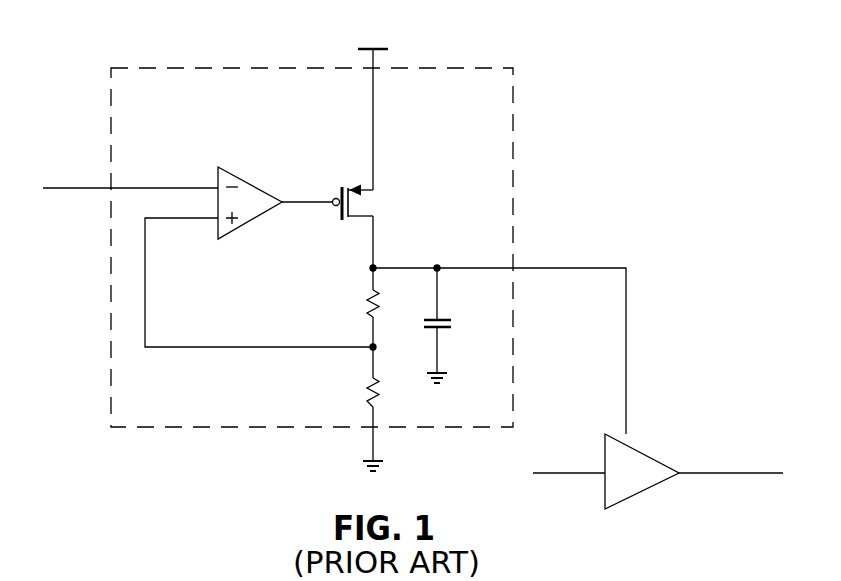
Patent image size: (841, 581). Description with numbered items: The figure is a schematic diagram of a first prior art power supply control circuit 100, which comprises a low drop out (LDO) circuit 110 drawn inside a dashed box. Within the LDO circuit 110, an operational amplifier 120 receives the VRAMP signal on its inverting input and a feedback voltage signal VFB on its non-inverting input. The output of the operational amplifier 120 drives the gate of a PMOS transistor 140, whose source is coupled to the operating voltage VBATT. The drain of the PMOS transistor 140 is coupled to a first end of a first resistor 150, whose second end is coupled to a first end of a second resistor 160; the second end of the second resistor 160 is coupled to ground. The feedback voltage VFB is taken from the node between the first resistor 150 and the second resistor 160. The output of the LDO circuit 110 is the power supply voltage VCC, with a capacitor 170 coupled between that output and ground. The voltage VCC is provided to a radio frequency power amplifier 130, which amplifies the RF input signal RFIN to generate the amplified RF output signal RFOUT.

The power supply control circuit 100 is at (584, 91).
The low drop out (LDO) circuit 110 is at (152, 68).
The operational amplifier 120 is at (250, 180).
The radio frequency (RF) power amplifier (PA) 130 is at (645, 452).
The PMOS transistor 140 is at (337, 208).
The first resistor 150 is at (367, 300).
The second resistor 160 is at (367, 387).
The capacitor 170 is at (446, 318).